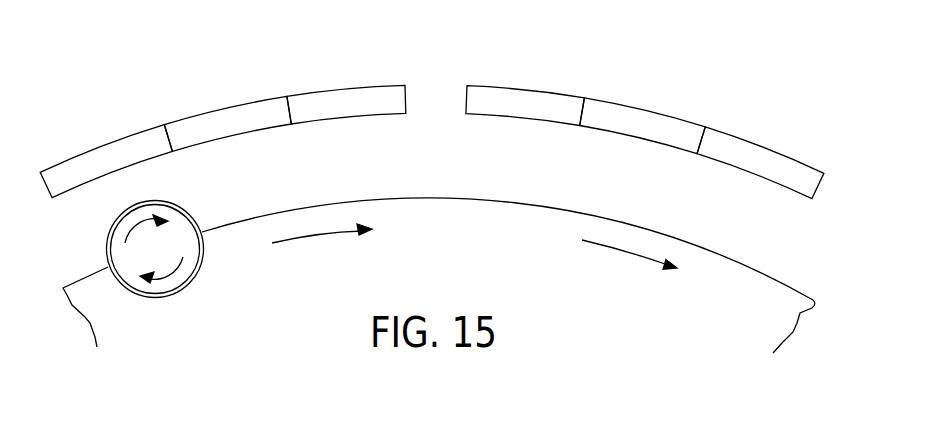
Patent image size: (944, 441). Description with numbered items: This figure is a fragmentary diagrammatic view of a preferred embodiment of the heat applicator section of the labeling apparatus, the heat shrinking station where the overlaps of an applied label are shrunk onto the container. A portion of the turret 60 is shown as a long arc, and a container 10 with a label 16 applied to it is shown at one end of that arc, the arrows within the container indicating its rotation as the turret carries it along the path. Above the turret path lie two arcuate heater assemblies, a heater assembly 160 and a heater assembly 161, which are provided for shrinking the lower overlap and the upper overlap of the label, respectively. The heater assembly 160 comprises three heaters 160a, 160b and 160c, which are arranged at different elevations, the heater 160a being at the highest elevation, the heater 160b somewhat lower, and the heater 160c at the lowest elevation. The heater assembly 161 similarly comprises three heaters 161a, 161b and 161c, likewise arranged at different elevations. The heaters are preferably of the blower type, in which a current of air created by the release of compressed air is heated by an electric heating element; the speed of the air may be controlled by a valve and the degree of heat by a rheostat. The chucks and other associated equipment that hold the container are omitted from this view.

The container 10 is at (118, 244).
The label 16 is at (107, 255).
The turret 60 is at (468, 272).
The heater assembly 160 is at (223, 105).
The heater 160a is at (88, 167).
The heater 160b is at (190, 130).
The heater 160c is at (305, 107).
The heater assembly 161 is at (651, 113).
The heater 161a is at (497, 102).
The heater 161b is at (628, 122).
The heater 161c is at (745, 152).